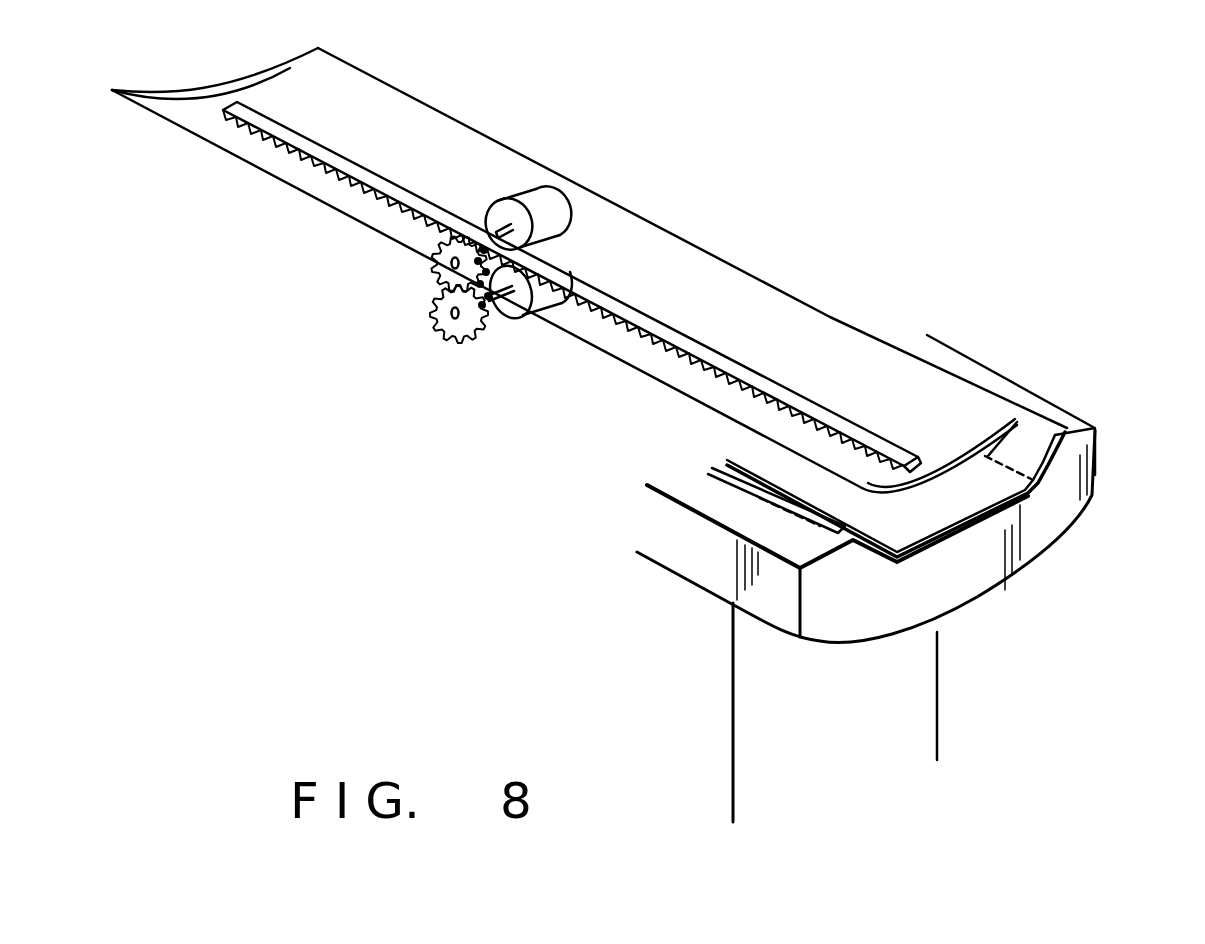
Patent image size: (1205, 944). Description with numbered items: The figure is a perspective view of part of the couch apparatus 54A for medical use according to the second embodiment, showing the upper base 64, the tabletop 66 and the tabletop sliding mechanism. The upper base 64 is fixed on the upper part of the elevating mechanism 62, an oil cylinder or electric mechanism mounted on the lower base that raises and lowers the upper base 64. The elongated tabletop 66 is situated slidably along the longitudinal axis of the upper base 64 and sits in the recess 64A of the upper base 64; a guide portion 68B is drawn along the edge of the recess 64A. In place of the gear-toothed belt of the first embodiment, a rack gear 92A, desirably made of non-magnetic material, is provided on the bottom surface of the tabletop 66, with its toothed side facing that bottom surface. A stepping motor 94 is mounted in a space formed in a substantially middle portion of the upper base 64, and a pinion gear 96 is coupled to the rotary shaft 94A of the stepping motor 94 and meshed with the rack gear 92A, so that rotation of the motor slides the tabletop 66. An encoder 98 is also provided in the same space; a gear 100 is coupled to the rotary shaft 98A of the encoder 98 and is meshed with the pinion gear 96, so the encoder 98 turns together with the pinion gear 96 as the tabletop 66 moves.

The couch apparatus 54A is at (897, 244).
The elevating mechanism 62 is at (718, 672).
The upper base 64 is at (977, 583).
The recess 64A is at (1035, 492).
The tabletop 66 is at (837, 350).
The guide rail 68B is at (1035, 448).
The rack gear 92A is at (660, 337).
The stepping motor 94 is at (547, 202).
The rotary shaft 94A is at (508, 226).
The pinion gear 96 is at (445, 266).
The encoder 98 is at (563, 258).
The rotary shaft 98A is at (497, 300).
The gear 100 is at (453, 345).